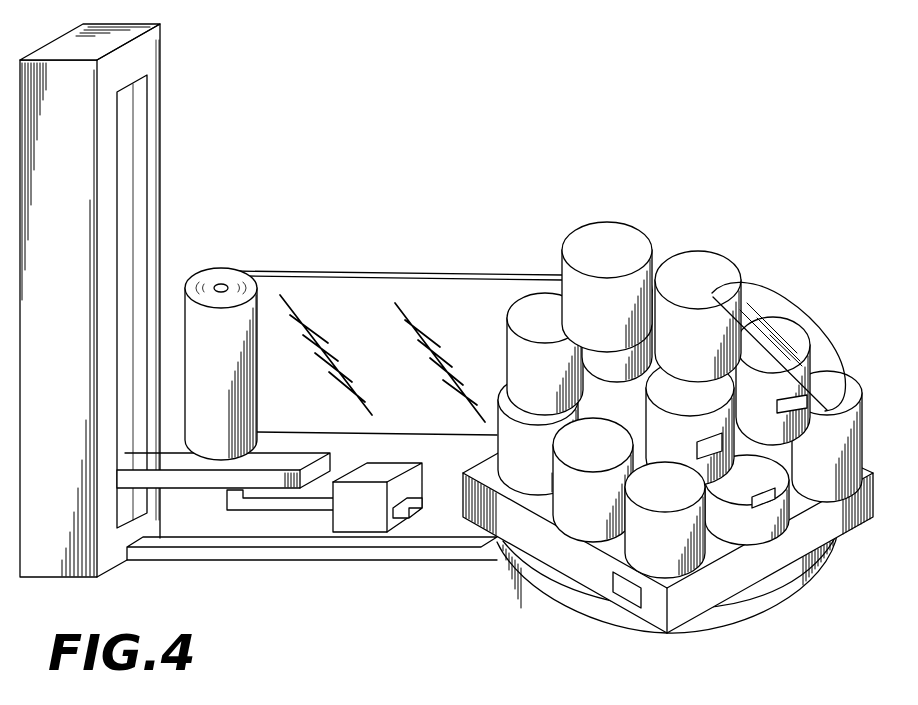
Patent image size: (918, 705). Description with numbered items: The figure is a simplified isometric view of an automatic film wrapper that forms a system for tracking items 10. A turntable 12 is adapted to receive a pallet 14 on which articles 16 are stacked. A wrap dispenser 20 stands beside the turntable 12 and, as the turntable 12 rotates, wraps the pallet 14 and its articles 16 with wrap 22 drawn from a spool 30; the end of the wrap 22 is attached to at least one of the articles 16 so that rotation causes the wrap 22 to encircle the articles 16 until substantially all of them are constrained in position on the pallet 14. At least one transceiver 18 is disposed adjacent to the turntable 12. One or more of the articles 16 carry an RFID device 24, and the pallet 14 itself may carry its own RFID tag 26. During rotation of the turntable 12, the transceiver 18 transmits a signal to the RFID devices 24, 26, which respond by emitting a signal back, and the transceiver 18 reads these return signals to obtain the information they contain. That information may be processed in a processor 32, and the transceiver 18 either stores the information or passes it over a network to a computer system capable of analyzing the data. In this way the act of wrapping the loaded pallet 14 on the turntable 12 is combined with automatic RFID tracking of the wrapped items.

The system for tracking items 10 is at (291, 333).
The turntable 12 is at (547, 593).
The pallet 14 is at (650, 557).
The articles 16 is at (613, 242).
The transceiver 18 is at (269, 548).
The wrap dispenser 20 is at (162, 176).
The wrap 22 is at (407, 275).
The RFID device (tag) 24 is at (807, 403).
The RFID tag 26 is at (610, 588).
The spool 30 is at (219, 285).
The processor 32 is at (412, 516).